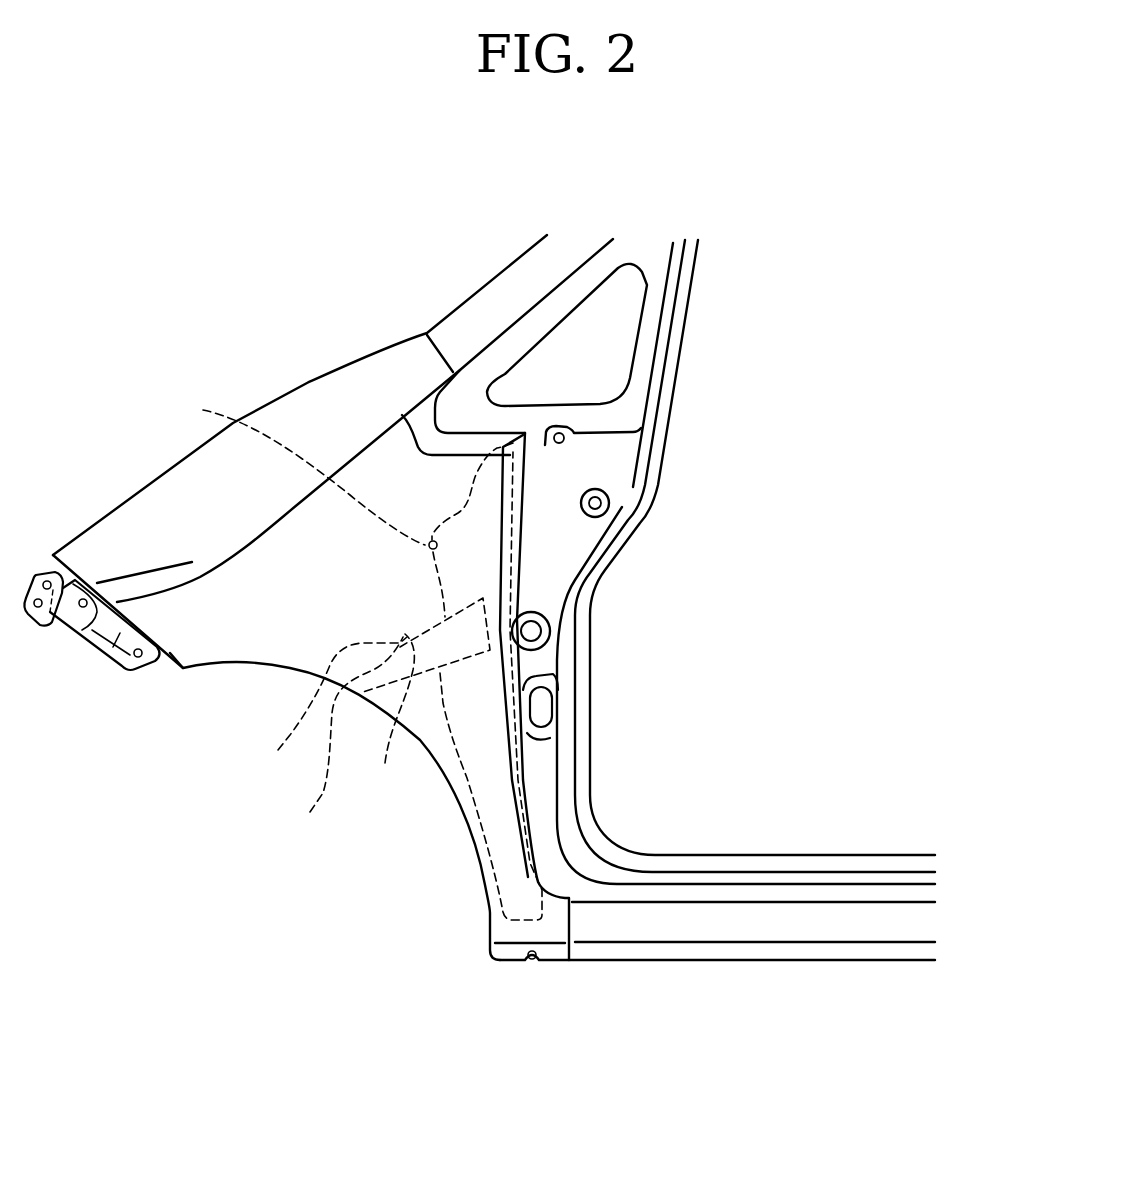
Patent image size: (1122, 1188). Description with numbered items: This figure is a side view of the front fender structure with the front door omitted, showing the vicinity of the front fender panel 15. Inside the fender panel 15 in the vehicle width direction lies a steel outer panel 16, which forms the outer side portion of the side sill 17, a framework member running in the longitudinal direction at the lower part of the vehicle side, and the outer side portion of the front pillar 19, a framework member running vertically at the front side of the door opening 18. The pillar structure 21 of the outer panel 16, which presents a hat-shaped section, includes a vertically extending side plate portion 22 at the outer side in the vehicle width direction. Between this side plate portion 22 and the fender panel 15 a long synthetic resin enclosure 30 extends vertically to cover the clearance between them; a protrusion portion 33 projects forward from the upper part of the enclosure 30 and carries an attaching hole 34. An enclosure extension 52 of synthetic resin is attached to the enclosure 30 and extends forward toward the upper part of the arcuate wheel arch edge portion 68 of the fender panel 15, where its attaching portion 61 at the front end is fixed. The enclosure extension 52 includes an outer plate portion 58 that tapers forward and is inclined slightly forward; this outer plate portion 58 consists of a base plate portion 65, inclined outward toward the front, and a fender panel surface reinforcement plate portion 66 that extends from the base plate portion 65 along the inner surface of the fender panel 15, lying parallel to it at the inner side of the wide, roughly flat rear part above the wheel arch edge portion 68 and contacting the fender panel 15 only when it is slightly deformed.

The front fender panel 15 is at (268, 398).
The outer panel 16 is at (642, 537).
The side sill 17 is at (803, 927).
The door opening 18 is at (588, 738).
The front pillar 19 is at (555, 658).
The pillar structure 21 is at (557, 610).
The side plate portion 22 is at (557, 553).
The enclosure 30 is at (455, 790).
The protrusion portion 33 is at (433, 550).
The attaching hole 34 is at (289, 466).
The enclosure extension 52 is at (321, 710).
The outer plate portion 58 is at (382, 719).
The attaching portion 61 is at (339, 740).
The base plate portion 65 is at (460, 607).
The fender panel surface reinforcement plate portion 66 is at (403, 643).
The wheel arch edge portion 68 is at (228, 663).